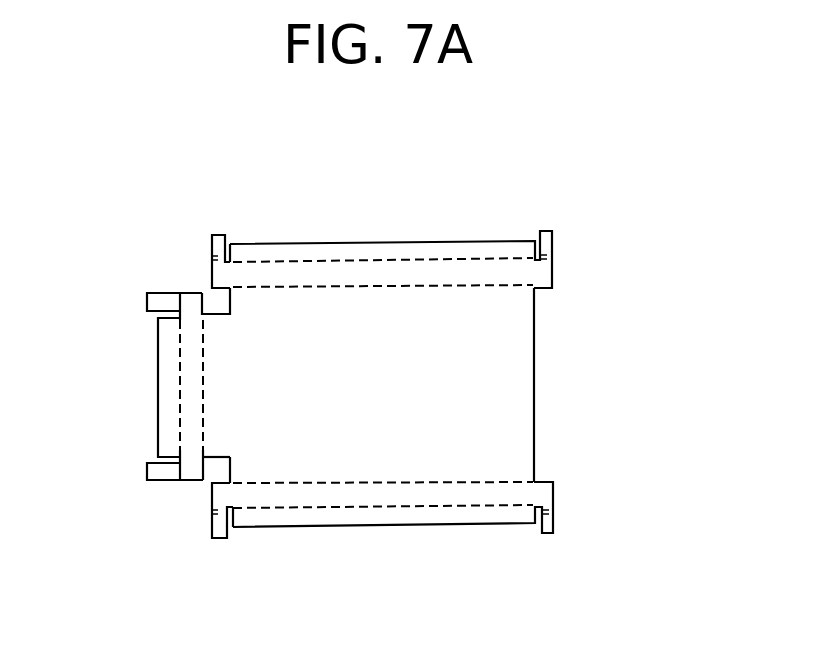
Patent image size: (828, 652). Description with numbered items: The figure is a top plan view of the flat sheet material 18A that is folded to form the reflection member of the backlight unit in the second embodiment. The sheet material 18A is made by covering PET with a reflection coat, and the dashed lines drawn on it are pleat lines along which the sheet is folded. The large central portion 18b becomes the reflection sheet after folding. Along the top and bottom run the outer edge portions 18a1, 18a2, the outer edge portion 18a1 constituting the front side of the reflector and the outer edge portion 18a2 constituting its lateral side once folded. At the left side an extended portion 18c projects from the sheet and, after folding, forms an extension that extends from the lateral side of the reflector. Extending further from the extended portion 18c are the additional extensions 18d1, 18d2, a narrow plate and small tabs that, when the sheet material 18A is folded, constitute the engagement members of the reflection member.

The sheet material 18A is at (577, 315).
The outer edge portion 18a1 is at (452, 250).
The outer edge portion 18a2 is at (452, 273).
The central portion 18b is at (505, 383).
The extended portion 18c is at (183, 292).
The additional extension 18d1 is at (147, 304).
The additional extension 18d2 is at (175, 293).